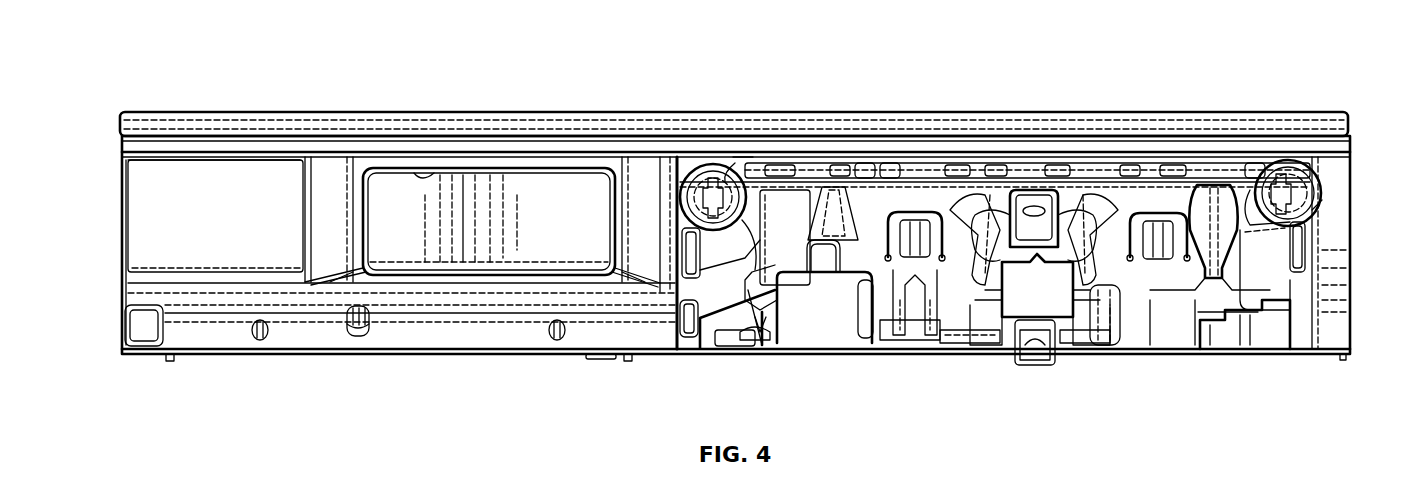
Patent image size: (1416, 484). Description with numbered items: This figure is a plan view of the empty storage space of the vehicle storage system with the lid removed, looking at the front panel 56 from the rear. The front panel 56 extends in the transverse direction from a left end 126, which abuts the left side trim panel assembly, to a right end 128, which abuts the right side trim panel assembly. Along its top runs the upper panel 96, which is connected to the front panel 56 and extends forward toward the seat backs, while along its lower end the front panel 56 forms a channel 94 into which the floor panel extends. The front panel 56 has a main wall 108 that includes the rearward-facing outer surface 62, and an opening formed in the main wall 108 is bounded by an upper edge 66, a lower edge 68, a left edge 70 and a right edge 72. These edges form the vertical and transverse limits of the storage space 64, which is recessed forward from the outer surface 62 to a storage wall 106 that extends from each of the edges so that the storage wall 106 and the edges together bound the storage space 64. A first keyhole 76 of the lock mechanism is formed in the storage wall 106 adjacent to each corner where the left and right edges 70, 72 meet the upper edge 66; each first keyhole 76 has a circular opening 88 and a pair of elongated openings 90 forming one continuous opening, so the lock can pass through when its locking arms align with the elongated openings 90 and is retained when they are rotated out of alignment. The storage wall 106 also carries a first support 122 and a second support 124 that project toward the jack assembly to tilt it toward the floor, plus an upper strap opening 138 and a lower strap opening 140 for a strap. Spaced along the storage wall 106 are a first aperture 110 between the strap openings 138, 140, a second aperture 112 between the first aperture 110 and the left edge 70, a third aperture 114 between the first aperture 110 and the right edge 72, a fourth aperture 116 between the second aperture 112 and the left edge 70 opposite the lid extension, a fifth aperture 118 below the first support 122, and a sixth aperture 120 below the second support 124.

The front panel 56 is at (290, 357).
The outer surface 62 is at (200, 220).
The storage space 64 is at (1264, 265).
The upper edge 66 is at (968, 170).
The lower edge 68 is at (988, 355).
The left edge 70 is at (668, 243).
The right edge 72 is at (1318, 208).
The first keyhole 76 is at (728, 188).
The circular opening 88 is at (705, 180).
The elongated openings 90 is at (712, 195).
The channel 94 is at (418, 333).
The upper panel 96 is at (428, 112).
The storage wall 106 is at (878, 206).
The main wall 108 is at (132, 180).
The first aperture 110 is at (1018, 300).
The second aperture 112 is at (832, 310).
The third aperture 114 is at (1272, 322).
The fourth aperture 116 is at (712, 325).
The fifth aperture 118 is at (915, 250).
The sixth aperture 120 is at (1152, 260).
The first support 122 is at (914, 222).
The second support 124 is at (1157, 222).
The left end 126 is at (121, 222).
The right end 128 is at (1352, 320).
The upper strap opening 138 is at (1032, 208).
The lower strap opening 140 is at (1045, 332).